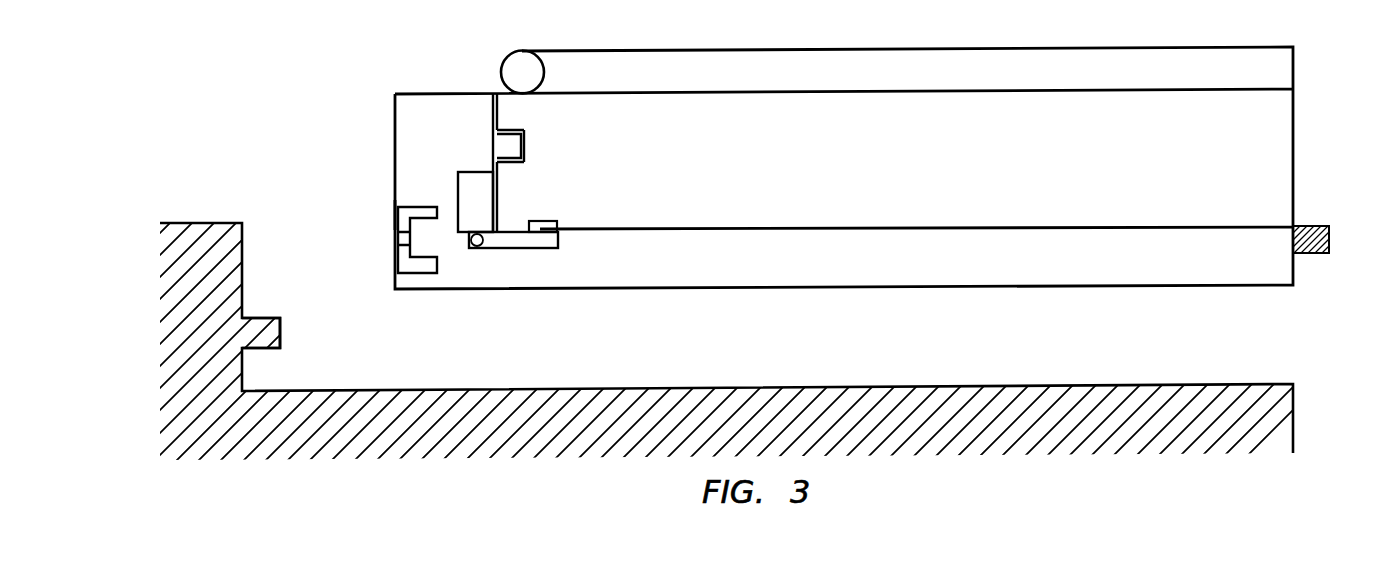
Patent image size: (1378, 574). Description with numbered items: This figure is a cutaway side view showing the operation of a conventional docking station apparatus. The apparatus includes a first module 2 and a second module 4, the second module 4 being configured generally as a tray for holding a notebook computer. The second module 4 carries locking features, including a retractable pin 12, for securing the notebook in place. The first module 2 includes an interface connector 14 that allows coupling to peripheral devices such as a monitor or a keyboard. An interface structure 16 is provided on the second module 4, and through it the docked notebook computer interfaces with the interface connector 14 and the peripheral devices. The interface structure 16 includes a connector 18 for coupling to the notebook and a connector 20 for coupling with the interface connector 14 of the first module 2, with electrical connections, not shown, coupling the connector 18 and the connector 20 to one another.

The first module 2 is at (634, 386).
The second module 4 is at (1070, 287).
The retractable pin 12 is at (514, 249).
The interface connector 14 is at (268, 333).
The interface structure 16 is at (380, 213).
The connector 18 is at (507, 145).
The connector 20 is at (395, 240).